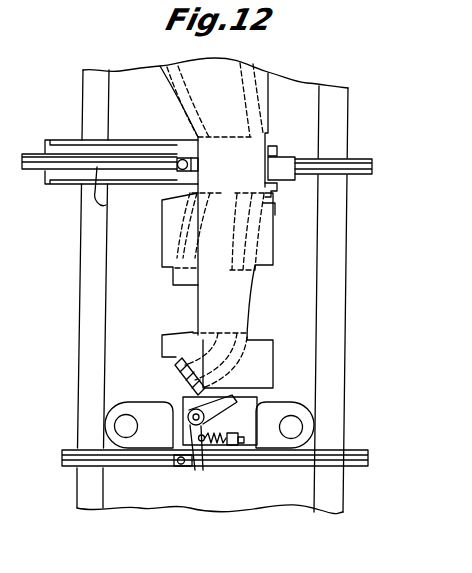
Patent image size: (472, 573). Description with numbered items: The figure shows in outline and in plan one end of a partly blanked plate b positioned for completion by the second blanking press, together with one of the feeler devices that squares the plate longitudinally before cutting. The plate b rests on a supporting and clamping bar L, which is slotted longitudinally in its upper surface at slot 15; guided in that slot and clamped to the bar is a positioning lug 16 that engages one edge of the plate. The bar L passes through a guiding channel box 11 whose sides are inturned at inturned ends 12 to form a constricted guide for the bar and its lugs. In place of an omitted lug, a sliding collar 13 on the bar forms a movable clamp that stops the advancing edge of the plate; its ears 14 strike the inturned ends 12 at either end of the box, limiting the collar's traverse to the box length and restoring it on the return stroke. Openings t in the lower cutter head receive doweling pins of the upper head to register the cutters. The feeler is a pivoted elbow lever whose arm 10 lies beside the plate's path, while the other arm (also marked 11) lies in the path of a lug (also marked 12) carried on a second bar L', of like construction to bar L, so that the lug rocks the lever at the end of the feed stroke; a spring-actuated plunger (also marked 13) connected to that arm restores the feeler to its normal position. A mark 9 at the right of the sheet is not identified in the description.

The figure index 9 is at (460, 298).
The arm of elbow lever 10 is at (222, 407).
The guiding channel box 11 is at (60, 140).
The inturned ends of channel box 12 is at (280, 190).
The sliding collar 13 is at (282, 163).
The ears of sliding collar 14 is at (277, 148).
The longitudinal slot 15 is at (114, 194).
The positioning lug 16 is at (147, 127).
The supporting and clamping bar L is at (208, 155).
The bar carrying actuating lug L' is at (229, 454).
The plate b is at (217, 363).
The openings in lower cutter head t is at (209, 425).